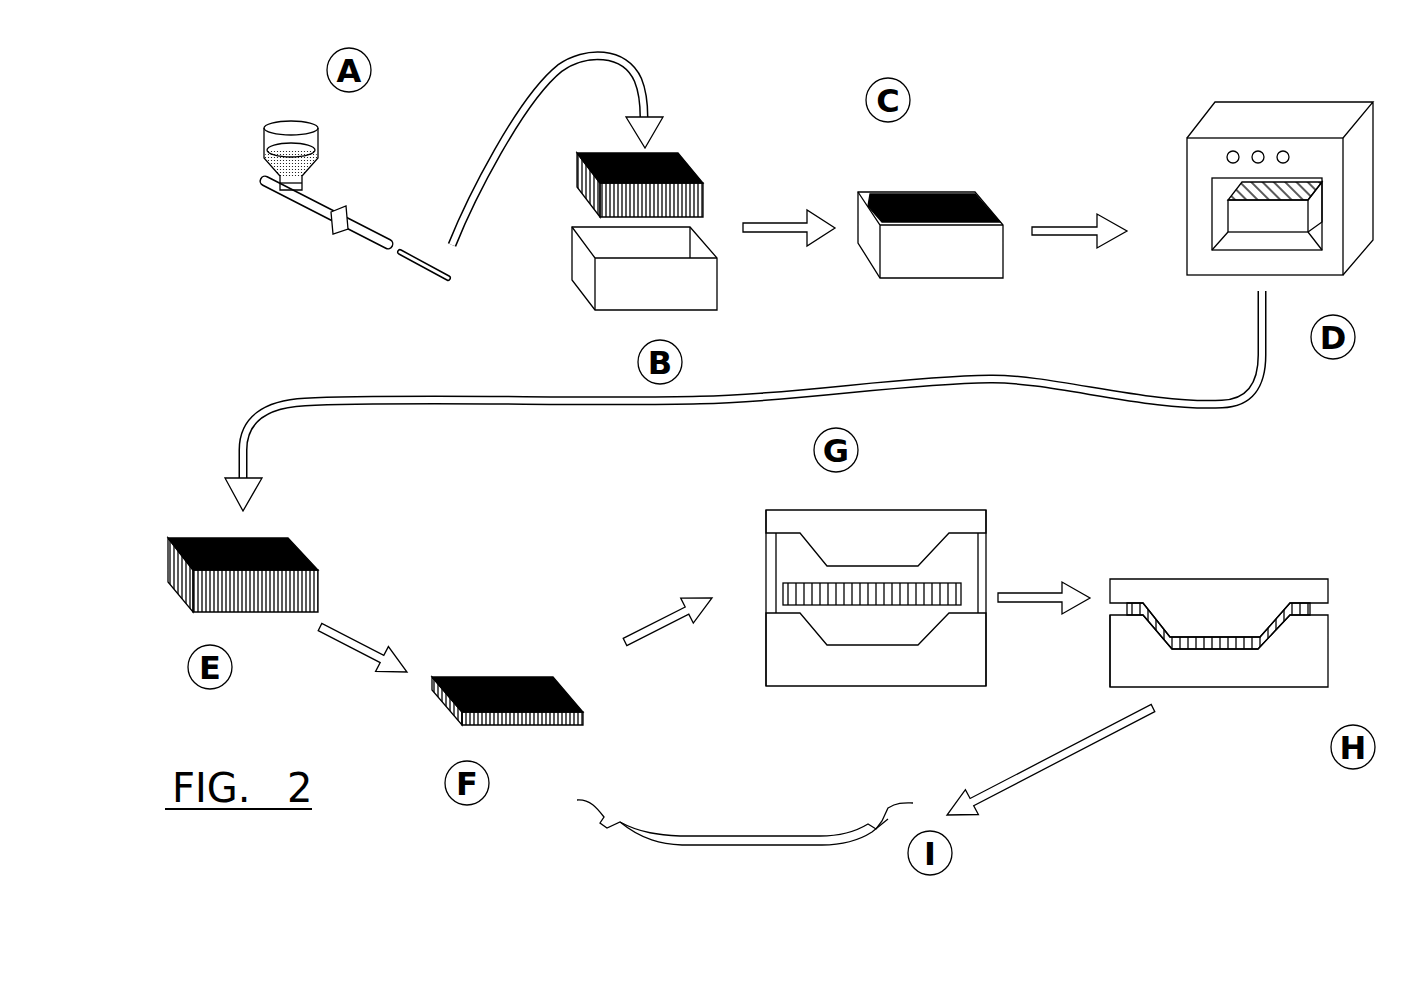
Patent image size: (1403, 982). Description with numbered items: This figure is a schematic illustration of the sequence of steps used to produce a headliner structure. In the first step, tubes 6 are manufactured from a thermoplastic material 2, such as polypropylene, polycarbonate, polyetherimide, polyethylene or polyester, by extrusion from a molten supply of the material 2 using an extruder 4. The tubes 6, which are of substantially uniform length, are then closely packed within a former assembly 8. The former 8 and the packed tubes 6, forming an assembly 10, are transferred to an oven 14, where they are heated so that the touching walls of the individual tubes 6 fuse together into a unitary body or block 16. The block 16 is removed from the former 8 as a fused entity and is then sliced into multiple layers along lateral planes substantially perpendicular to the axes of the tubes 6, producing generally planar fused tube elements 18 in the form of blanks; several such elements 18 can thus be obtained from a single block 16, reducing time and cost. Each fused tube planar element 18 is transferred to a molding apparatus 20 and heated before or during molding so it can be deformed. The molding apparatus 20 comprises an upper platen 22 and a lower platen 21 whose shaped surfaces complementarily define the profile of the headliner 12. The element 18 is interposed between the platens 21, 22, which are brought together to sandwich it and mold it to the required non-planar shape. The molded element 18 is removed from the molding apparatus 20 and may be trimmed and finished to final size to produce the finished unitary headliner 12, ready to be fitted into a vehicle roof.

The thermoplastic material 2 is at (262, 141).
The extruder 4 is at (313, 200).
The tubes 6 is at (427, 273).
The former assembly 8 is at (627, 297).
The assembly 10 is at (913, 182).
The headliner 12 is at (735, 838).
The oven 14 is at (1190, 173).
The block 16 is at (268, 523).
The fused tube planar element 18 is at (480, 670).
The molding apparatus 20 is at (763, 640).
The lower platen 21 is at (871, 671).
The upper platen 22 is at (874, 532).